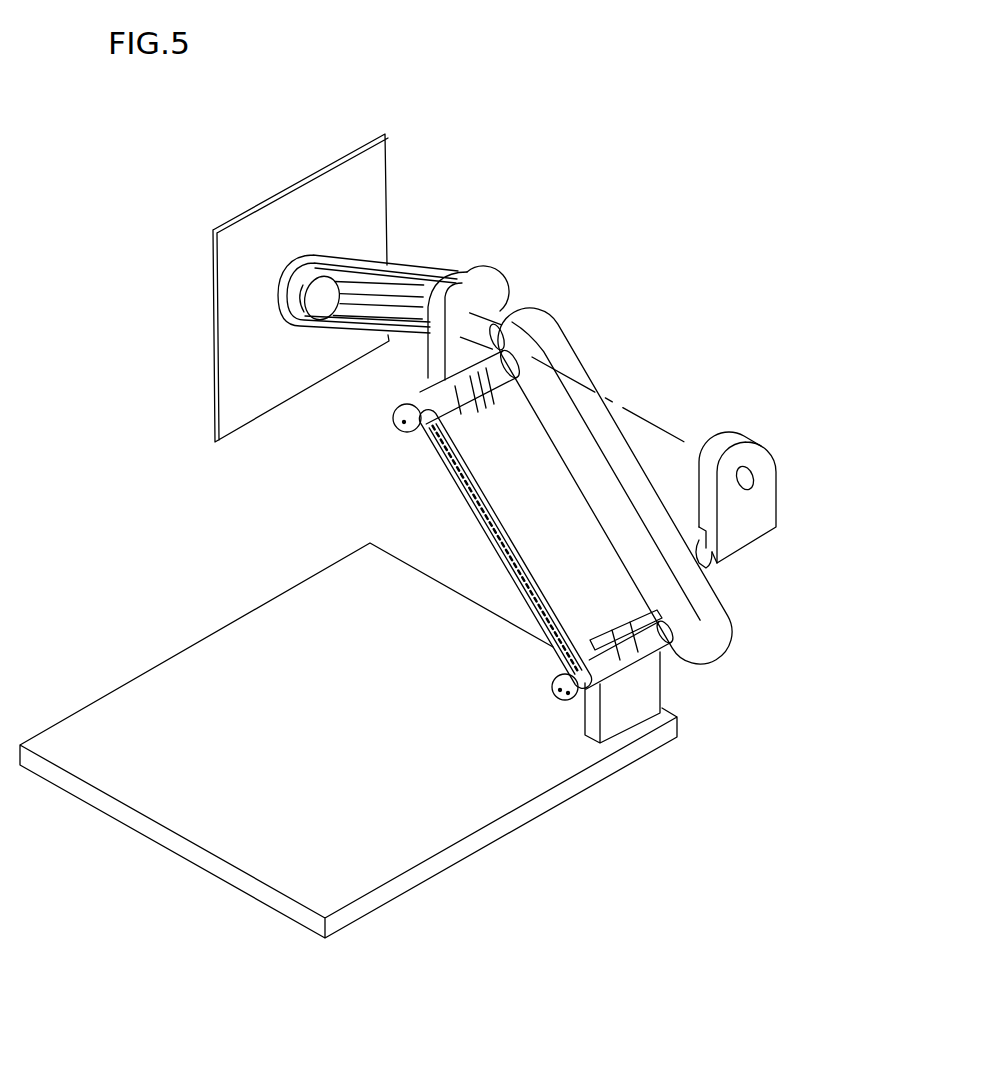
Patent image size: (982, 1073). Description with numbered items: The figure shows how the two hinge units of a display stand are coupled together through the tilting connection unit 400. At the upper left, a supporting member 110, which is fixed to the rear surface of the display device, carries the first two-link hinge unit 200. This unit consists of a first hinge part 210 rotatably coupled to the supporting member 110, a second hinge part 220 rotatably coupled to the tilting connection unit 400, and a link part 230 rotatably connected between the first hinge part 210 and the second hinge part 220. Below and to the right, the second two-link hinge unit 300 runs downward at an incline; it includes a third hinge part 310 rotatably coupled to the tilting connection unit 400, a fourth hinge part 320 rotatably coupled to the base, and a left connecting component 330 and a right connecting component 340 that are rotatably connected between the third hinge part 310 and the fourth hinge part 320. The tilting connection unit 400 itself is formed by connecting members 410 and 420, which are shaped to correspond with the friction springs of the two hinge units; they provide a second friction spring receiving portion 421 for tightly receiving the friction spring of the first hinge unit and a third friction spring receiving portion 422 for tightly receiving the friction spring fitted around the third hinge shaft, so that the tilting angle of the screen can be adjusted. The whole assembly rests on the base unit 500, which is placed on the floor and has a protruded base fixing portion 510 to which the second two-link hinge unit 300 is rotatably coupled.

The supporting member 110 is at (234, 333).
The first two-link hinge unit 200 is at (414, 243).
The first hinge part 210 is at (337, 290).
The second hinge part 220 is at (458, 290).
The link part 230 is at (377, 287).
The second two-link hinge unit 300 is at (590, 348).
The third hinge part 310 is at (398, 446).
The fourth hinge part 320 is at (545, 700).
The left connecting component 330 is at (470, 548).
The right connecting component 340 is at (676, 409).
The tilting connection unit 400 is at (558, 301).
The connecting member 410 is at (493, 293).
The connecting member 420 is at (767, 455).
The second friction spring receiving portion 421 is at (762, 481).
The third friction spring receiving portion 422 is at (697, 565).
The base unit 500 is at (423, 827).
The base fixing portion 510 is at (652, 690).